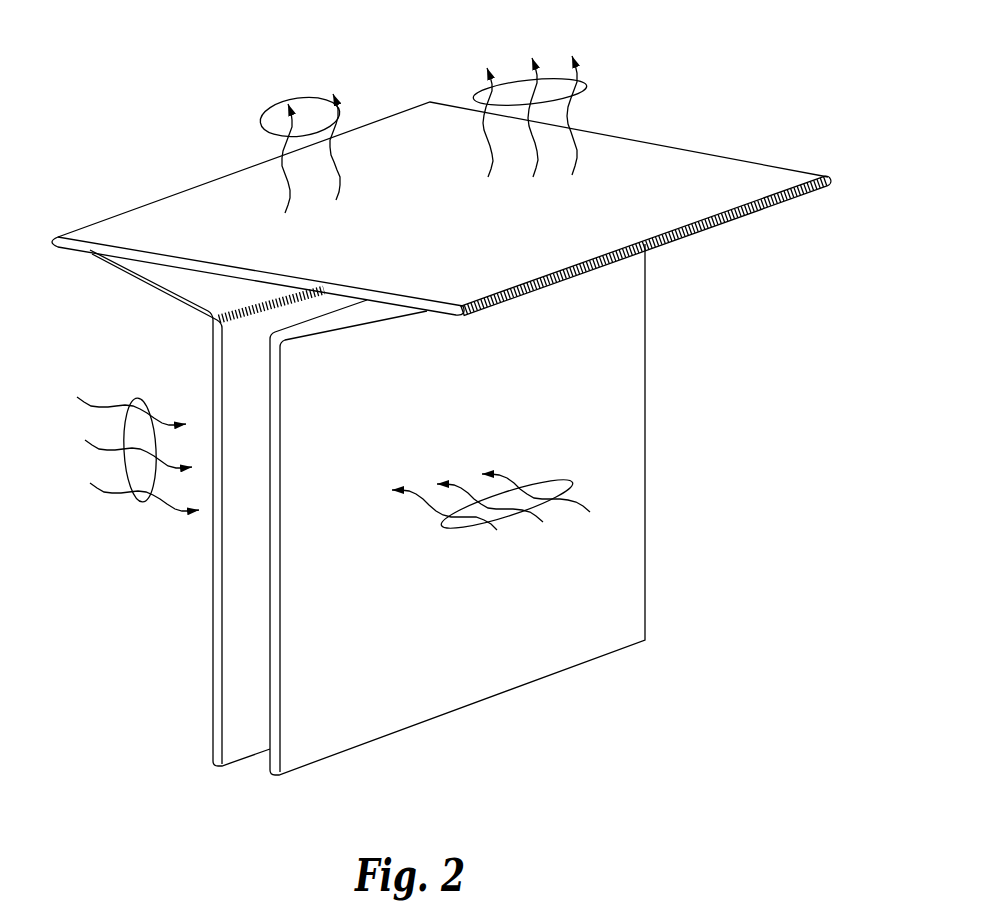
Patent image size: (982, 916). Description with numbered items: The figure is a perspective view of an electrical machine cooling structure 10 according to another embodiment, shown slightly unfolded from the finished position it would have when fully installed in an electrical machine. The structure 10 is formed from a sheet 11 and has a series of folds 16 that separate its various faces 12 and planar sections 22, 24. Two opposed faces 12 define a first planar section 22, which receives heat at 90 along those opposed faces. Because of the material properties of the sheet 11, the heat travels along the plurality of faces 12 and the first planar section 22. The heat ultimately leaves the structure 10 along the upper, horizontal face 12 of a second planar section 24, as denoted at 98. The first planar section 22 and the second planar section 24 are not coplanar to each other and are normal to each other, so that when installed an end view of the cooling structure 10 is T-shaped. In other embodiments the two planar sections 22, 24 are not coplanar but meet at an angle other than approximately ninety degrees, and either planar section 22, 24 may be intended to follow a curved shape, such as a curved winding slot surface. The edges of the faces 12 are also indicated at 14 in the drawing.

The electrical machine cooling structure 10 is at (142, 68).
The sheet 11 is at (412, 75).
The face 12 is at (405, 221).
The panel edge 14 is at (705, 150).
The fold 16 is at (138, 191).
The first planar section 22 is at (692, 532).
The second planar section 24 is at (202, 131).
The heat received 90 is at (134, 502).
The heat leaving 98 is at (341, 106).